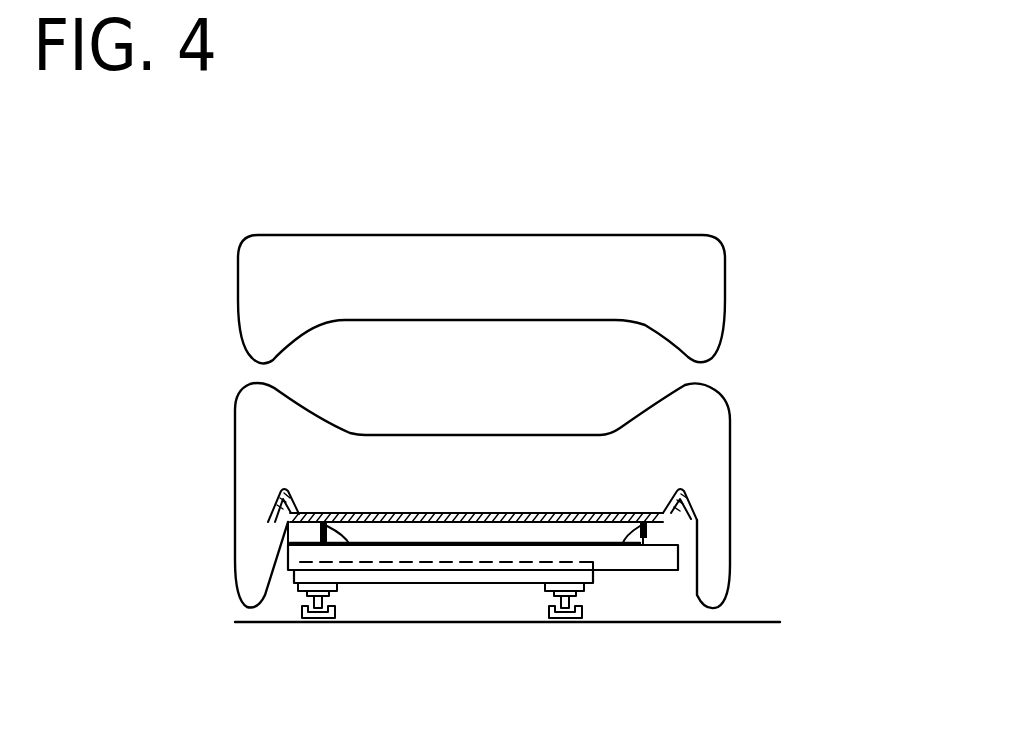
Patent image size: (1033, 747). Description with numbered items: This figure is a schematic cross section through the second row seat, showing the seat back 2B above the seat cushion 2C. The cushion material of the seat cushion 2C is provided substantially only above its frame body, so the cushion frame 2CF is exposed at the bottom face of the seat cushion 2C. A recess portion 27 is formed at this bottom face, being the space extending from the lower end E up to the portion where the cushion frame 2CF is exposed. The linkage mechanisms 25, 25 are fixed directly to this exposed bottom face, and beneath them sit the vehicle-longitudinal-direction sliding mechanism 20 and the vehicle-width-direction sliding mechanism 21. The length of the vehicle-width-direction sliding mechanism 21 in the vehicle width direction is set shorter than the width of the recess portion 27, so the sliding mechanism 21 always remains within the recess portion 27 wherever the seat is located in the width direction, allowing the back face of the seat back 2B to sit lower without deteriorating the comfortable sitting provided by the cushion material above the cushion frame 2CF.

The seat back 2B is at (667, 288).
The seat cushion 2C is at (698, 443).
The cushion frame 2CF is at (513, 525).
The recess portion 27 is at (420, 537).
The vehicle-width-direction sliding mechanism 21 is at (517, 583).
The linkage mechanism 25 is at (323, 535).
The vehicle-longitudinal-direction sliding mechanism 20 is at (317, 622).
The lower end E is at (245, 605).